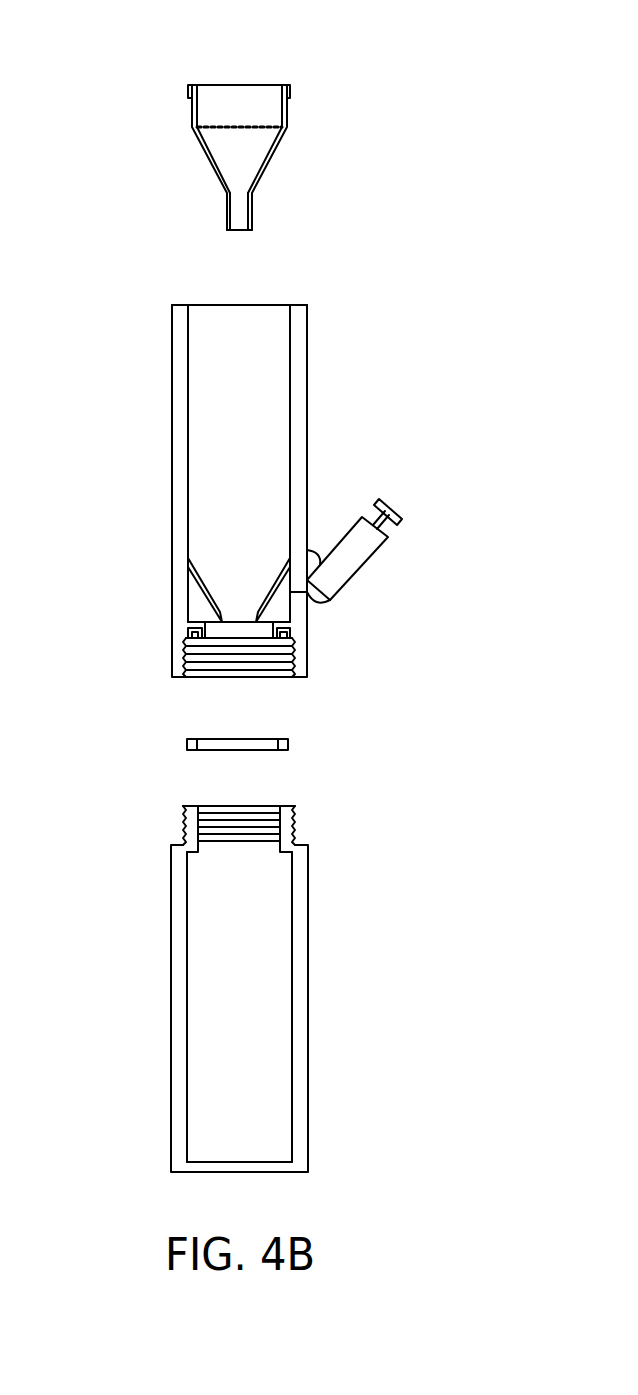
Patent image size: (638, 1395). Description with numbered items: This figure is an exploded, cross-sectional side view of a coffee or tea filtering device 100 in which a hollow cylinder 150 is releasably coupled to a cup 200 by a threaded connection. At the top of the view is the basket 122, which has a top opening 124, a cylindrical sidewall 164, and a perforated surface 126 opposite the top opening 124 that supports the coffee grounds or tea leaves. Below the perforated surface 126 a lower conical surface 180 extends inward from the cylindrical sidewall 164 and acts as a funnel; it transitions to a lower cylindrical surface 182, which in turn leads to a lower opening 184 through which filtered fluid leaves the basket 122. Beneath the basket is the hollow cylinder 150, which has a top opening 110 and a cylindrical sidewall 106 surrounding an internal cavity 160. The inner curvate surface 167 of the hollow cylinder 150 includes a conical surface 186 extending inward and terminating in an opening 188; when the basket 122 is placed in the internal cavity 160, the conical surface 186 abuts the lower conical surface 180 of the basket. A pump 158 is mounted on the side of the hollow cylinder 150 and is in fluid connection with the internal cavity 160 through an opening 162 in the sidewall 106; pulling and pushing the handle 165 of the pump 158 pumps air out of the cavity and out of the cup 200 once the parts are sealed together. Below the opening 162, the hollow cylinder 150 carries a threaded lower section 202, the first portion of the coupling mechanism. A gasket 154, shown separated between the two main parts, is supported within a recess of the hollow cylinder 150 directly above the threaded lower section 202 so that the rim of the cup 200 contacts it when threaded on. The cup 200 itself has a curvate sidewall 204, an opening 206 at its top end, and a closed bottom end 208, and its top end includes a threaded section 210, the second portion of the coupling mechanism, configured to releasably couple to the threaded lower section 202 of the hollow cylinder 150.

The coffee or tea filtering device 100 is at (96, 266).
The cylindrical sidewall 106 is at (297, 452).
The top opening 110 is at (258, 289).
The basket 122 is at (315, 69).
The top opening 124 is at (222, 66).
The perforated surface 126 is at (245, 128).
The hollow cylinder 150 is at (140, 450).
The gasket 154 is at (187, 745).
The pump 158 is at (389, 578).
The internal cavity 160 is at (258, 449).
The opening 162 is at (301, 611).
The cylindrical sidewall 164 is at (290, 101).
The handle 165 is at (380, 497).
The inner curvate surface 167 is at (188, 342).
The lower conical surface 180 is at (203, 155).
The lower cylindrical surface 182 is at (227, 207).
The lower opening 184 is at (238, 247).
The conical surface 186 is at (272, 585).
The opening 188 is at (231, 591).
The cup 200 is at (107, 997).
The threaded lower section 202 is at (216, 669).
The curvate sidewall 204 is at (297, 1017).
The opening 206 is at (261, 793).
The closed bottom end 208 is at (223, 1162).
The threaded section 210 is at (311, 827).